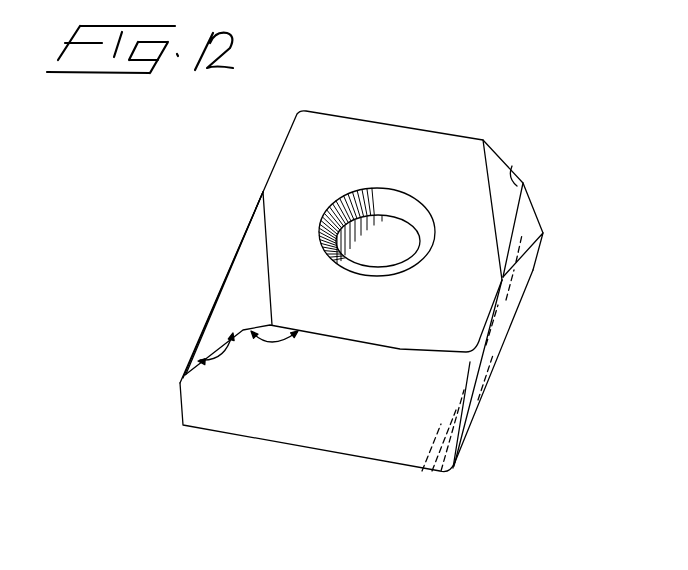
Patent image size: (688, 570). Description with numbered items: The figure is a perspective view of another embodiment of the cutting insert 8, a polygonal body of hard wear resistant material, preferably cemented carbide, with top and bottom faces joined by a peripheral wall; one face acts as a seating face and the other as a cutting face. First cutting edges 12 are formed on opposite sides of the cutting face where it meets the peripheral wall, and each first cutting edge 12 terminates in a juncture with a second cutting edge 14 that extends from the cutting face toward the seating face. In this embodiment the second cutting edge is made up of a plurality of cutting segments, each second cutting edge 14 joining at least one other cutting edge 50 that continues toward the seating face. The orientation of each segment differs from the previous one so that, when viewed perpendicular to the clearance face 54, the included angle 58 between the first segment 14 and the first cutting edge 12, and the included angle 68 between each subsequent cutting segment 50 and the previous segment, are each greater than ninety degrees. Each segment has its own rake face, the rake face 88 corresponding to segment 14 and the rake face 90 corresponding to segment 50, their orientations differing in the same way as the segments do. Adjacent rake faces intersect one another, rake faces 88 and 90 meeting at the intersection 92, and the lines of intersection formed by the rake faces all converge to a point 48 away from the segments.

The cutting insert 8 is at (367, 143).
The first cutting edge 12 is at (406, 347).
The second cutting edge 14 is at (223, 297).
The point 48 is at (263, 192).
The other cutting edge 50 is at (205, 337).
The clearance face 54 is at (400, 433).
The included angle 58 is at (276, 344).
The included angle 68 is at (221, 358).
The rake face 88 is at (260, 250).
The rake face 90 is at (213, 325).
The intersection 92 is at (242, 327).